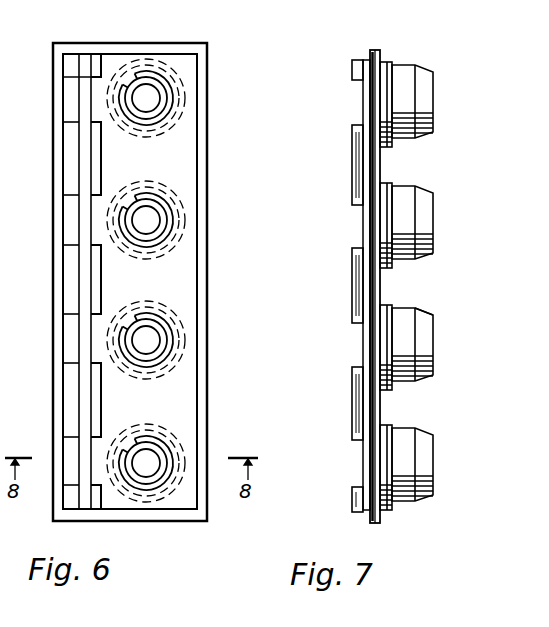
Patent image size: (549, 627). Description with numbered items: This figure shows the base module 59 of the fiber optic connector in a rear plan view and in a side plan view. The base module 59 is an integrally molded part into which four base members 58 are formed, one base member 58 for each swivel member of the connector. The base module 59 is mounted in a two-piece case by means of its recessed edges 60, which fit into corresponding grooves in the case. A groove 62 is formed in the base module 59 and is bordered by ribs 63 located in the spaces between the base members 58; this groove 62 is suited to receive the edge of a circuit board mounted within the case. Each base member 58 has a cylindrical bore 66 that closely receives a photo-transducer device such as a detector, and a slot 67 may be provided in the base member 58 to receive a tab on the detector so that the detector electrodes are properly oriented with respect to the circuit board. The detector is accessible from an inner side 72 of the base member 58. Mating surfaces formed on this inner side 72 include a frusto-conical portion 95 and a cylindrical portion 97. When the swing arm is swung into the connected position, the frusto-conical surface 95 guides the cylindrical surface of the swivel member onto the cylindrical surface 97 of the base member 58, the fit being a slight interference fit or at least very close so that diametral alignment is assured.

In FIG. 6, the base module 59 is at (203, 40).
In FIG. 7, the base module 59 is at (365, 50).
In FIG. 6, the recessed edges 60 is at (134, 44).
In FIG. 7, the recessed edges 60 is at (372, 460).
In FIG. 6, the groove 62 is at (84, 92).
In FIG. 6, the ribs 63 is at (100, 164).
In FIG. 7, the ribs 63 is at (353, 157).
In FIG. 6, the cylindrical bore 66 is at (145, 330).
In FIG. 6, the slot 67 is at (124, 80).
In FIG. 7, the base member 58 is at (435, 80).
In FIG. 7, the cylindrical portion 97 is at (400, 307).
In FIG. 7, the frusto-conical portion 95 is at (426, 313).
In FIG. 7, the inner side 72 is at (436, 358).